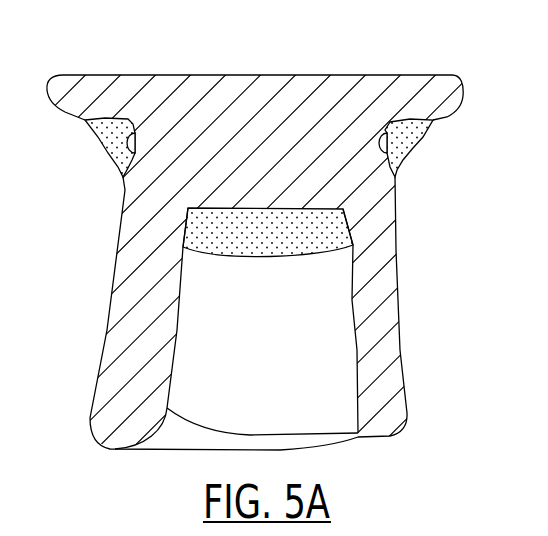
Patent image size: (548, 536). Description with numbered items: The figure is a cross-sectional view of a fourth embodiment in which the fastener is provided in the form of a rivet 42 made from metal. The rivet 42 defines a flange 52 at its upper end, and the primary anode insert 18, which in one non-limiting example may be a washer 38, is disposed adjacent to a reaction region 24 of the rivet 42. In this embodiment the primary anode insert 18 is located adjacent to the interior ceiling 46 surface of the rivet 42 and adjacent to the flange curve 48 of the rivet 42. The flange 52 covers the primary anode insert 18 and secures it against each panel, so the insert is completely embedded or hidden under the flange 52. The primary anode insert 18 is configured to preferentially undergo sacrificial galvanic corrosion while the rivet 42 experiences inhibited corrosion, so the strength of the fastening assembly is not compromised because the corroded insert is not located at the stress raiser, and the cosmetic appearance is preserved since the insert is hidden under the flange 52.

The primary anode insert 18 is at (339, 248).
The reaction region 24 is at (105, 101).
The washer 38 is at (339, 248).
The rivet 42 is at (268, 150).
The interior ceiling surface 46 is at (267, 205).
The flange curve 48 is at (137, 152).
The flange 52 is at (62, 87).